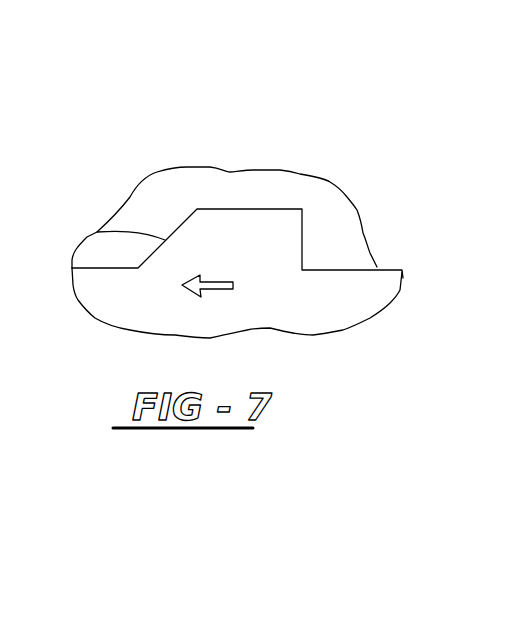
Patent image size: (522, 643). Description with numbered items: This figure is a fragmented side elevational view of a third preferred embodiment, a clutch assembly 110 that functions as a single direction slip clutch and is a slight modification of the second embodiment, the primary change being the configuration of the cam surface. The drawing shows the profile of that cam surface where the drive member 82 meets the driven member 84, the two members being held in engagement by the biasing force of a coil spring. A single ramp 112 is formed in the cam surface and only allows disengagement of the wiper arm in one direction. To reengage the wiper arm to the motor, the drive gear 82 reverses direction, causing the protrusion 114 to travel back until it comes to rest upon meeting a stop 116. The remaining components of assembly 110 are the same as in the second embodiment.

The clutch assembly 110 is at (112, 167).
The drive member 82 is at (98, 298).
The single ramp 112 is at (100, 235).
The driven member 84 is at (183, 188).
The protrusion 114 is at (268, 228).
The stop 116 is at (308, 245).